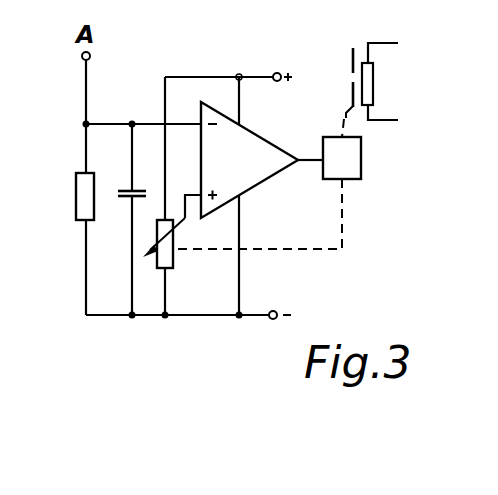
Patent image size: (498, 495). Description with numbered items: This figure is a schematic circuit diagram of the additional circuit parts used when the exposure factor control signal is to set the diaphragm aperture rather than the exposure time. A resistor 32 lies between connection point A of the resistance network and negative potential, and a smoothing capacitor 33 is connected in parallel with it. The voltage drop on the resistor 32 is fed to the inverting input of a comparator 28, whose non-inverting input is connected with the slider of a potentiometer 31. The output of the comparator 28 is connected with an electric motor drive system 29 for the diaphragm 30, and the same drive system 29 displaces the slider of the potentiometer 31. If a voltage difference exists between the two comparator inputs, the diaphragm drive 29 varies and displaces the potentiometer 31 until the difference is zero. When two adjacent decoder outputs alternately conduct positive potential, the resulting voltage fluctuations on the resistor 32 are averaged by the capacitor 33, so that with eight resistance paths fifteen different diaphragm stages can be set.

The comparator 28 is at (262, 173).
The electric motor drive system 29 is at (355, 170).
The diaphragm 30 is at (352, 77).
The potentiometer 31 is at (171, 254).
The resistor 32 is at (78, 192).
The smoothing capacitor 33 is at (123, 197).